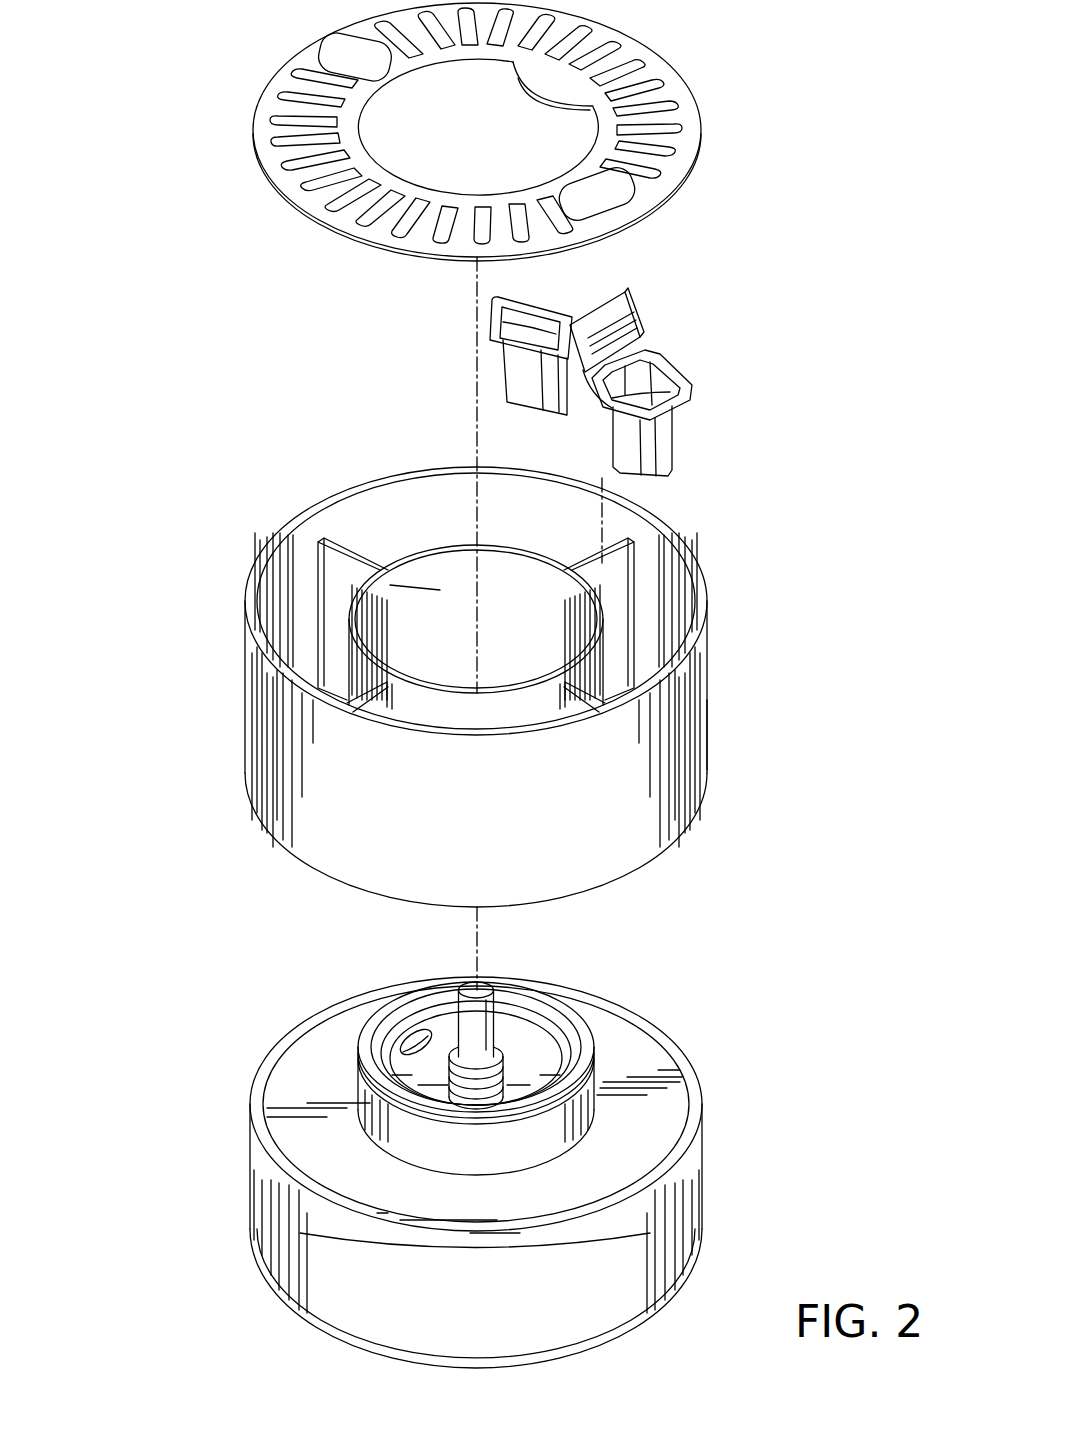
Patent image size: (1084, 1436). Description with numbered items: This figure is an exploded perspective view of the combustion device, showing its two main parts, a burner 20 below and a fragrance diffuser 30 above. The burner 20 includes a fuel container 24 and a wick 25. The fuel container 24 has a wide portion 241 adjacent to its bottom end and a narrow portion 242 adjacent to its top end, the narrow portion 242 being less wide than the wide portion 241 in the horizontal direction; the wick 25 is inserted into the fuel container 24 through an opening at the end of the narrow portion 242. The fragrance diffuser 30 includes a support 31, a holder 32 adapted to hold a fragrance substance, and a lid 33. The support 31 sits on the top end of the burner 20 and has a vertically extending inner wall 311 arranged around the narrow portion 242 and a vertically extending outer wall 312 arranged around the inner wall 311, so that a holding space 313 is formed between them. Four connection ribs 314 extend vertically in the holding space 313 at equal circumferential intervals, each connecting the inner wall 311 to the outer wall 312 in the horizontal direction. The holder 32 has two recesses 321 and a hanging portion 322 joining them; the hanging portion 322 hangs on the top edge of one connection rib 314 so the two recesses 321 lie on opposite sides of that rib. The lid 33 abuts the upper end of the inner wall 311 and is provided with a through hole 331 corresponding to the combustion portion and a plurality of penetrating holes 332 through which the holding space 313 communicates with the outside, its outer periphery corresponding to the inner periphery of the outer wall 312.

The burner 20 is at (232, 985).
The fuel container 24 is at (235, 1068).
The wick 25 is at (480, 1020).
The wide portion 241 is at (678, 1213).
The narrow portion 242 is at (555, 1122).
The fragrance diffuser 30 is at (165, 78).
The support 31 is at (728, 756).
The inner wall 311 is at (565, 615).
The outer wall 312 is at (610, 840).
The holding space 313 is at (382, 548).
The connection rib 314 is at (310, 570).
The holder 32 is at (652, 296).
The recess 321 is at (545, 330).
The hanging portion 322 is at (630, 318).
The lid 33 is at (678, 147).
The through hole 331 is at (575, 106).
The penetrating hole 332 is at (293, 72).